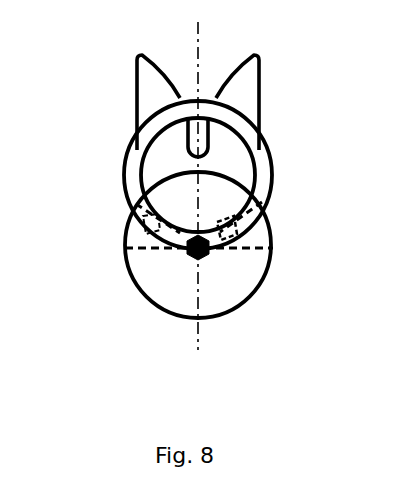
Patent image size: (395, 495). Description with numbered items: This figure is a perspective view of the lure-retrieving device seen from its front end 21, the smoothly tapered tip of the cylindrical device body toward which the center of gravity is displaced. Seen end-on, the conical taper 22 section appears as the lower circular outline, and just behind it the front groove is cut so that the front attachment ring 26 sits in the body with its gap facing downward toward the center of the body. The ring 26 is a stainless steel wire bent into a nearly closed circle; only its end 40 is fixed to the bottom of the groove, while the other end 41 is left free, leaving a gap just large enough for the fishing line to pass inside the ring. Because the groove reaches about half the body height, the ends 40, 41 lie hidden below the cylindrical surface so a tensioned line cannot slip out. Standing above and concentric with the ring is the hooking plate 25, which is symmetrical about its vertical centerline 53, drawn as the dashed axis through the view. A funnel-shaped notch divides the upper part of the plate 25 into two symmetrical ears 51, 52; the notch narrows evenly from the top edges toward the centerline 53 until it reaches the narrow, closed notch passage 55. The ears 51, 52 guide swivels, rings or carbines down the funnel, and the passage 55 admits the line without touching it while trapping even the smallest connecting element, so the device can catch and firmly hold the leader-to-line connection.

The front end 21 is at (205, 252).
The conical taper section 22 is at (170, 275).
The hooking plate 25 is at (225, 165).
The front attachment ring 26 is at (258, 162).
The attached end of front attachment ring 40 is at (165, 233).
The free end of front attachment ring 41 is at (240, 222).
The ear 51 is at (150, 88).
The ear 52 is at (245, 85).
The vertical centerline 53 is at (197, 293).
The notch passage 55 is at (185, 137).